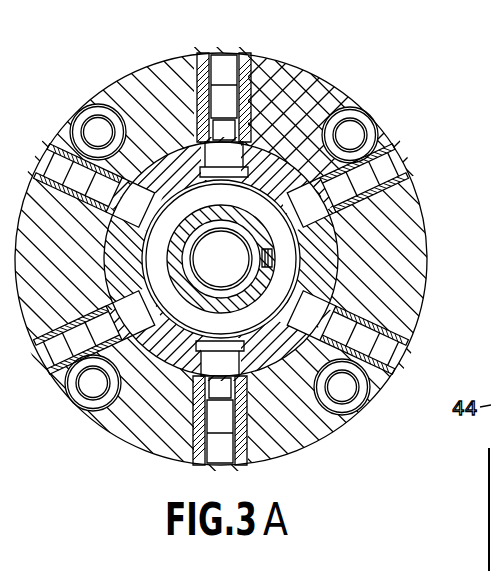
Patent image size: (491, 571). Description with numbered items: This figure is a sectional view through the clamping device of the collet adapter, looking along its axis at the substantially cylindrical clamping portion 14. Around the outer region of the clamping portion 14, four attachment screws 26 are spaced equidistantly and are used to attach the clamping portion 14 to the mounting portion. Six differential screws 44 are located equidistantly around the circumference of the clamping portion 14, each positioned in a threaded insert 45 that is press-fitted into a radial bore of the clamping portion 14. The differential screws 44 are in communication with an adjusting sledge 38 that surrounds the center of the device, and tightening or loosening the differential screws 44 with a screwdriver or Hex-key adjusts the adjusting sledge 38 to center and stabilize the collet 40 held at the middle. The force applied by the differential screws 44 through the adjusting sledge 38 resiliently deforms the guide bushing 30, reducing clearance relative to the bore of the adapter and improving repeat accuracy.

The clamping portion 14 is at (427, 246).
The attachment screws 26 is at (87, 108).
The guide bushing 30 is at (363, 110).
The adjusting sledge 38 is at (262, 140).
The collet 40 is at (192, 295).
The differential screws 44 is at (218, 100).
The threaded insert 45 is at (271, 68).